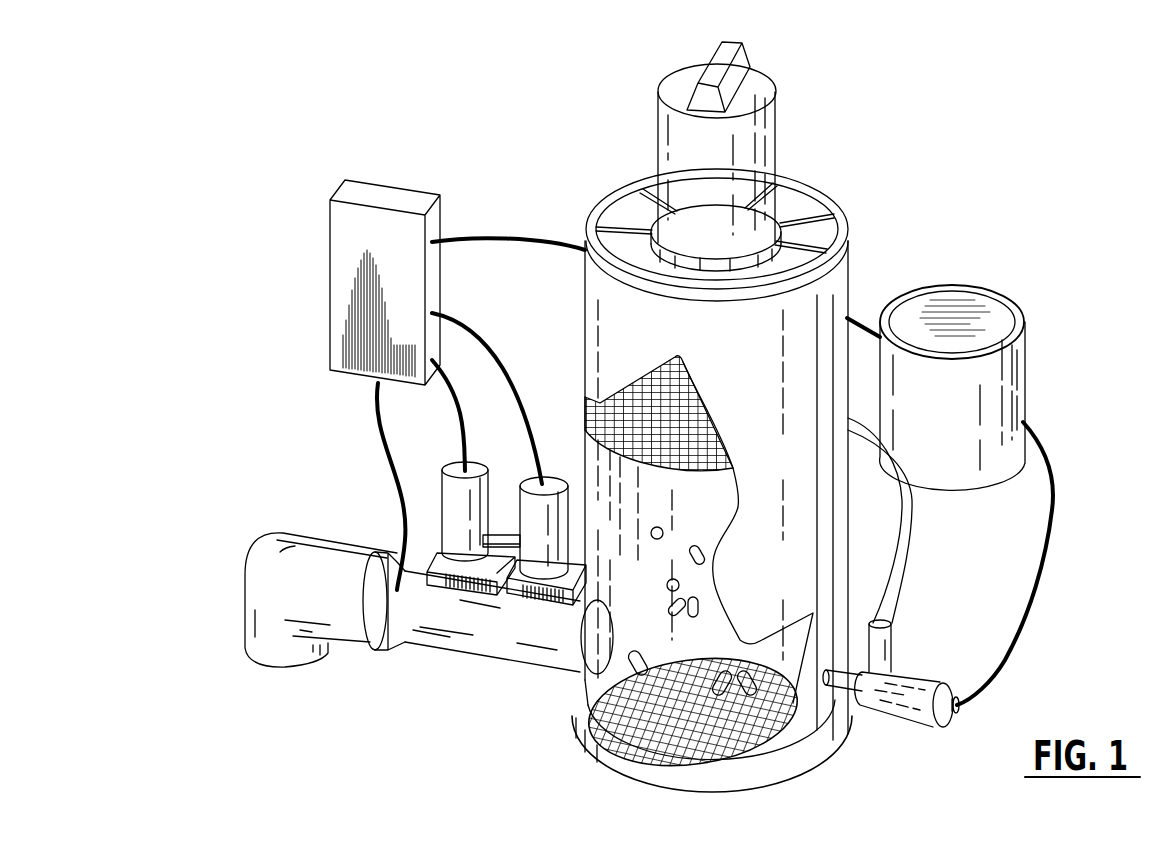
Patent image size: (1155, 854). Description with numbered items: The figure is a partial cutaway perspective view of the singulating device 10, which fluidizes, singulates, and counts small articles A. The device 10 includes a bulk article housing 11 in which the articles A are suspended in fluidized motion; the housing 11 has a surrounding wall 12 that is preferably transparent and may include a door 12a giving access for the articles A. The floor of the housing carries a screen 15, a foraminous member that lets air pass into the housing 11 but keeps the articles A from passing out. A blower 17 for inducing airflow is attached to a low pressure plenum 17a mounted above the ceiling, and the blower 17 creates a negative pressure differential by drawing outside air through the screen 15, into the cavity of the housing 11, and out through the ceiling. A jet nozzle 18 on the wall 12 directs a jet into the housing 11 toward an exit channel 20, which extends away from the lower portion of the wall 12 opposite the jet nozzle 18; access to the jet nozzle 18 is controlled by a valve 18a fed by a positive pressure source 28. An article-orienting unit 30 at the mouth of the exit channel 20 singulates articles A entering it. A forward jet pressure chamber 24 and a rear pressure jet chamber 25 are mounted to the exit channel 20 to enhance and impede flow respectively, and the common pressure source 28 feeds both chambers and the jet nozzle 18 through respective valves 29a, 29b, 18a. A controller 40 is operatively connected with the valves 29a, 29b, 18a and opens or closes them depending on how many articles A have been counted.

The singulating device 10 is at (840, 125).
The bulk article housing 11 is at (850, 557).
The surrounding wall 12 is at (808, 312).
The door 12a is at (585, 393).
The screen 15 is at (713, 730).
The blower 17 is at (810, 227).
The low pressure plenum 17a is at (627, 203).
The jet nozzle 18 is at (683, 443).
The valve 18a is at (932, 714).
The exit channel 20 is at (529, 688).
The forward jet pressure chamber 24 is at (463, 587).
The rear pressure jet chamber 25 is at (517, 590).
The pressure source 28 is at (987, 315).
The valve 29a is at (455, 466).
The valve 29b is at (553, 468).
The article-orienting unit 30 is at (659, 809).
The controller 40 is at (353, 225).
The articles A is at (606, 683).